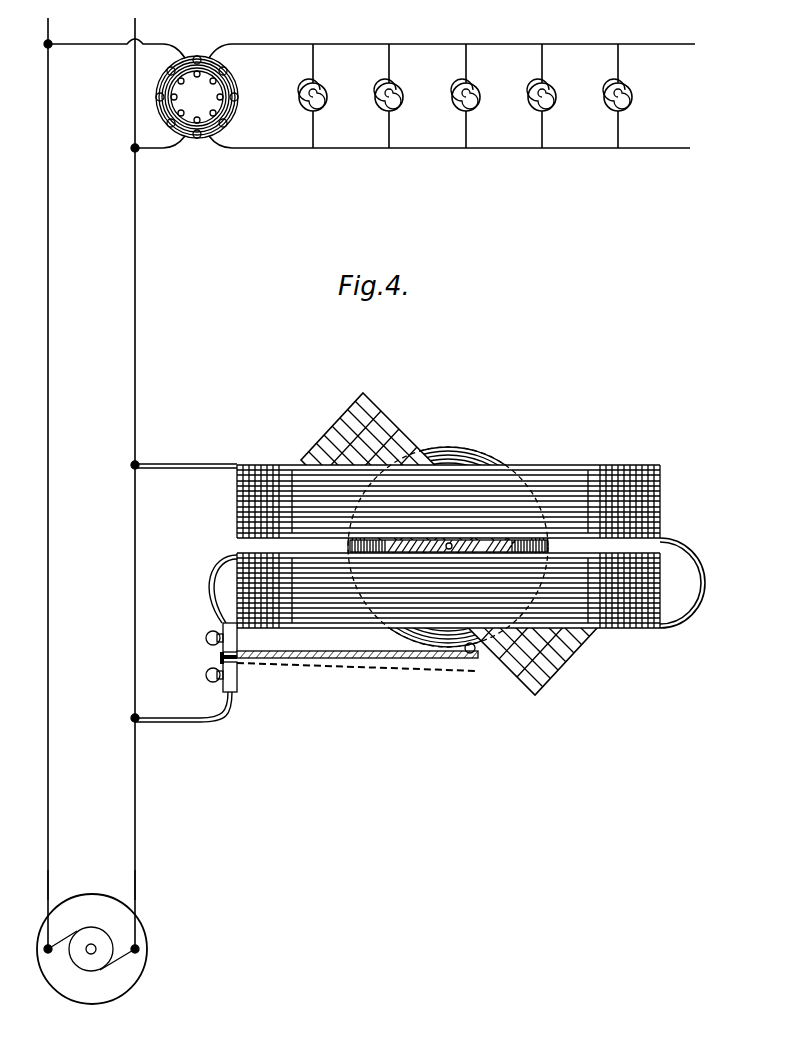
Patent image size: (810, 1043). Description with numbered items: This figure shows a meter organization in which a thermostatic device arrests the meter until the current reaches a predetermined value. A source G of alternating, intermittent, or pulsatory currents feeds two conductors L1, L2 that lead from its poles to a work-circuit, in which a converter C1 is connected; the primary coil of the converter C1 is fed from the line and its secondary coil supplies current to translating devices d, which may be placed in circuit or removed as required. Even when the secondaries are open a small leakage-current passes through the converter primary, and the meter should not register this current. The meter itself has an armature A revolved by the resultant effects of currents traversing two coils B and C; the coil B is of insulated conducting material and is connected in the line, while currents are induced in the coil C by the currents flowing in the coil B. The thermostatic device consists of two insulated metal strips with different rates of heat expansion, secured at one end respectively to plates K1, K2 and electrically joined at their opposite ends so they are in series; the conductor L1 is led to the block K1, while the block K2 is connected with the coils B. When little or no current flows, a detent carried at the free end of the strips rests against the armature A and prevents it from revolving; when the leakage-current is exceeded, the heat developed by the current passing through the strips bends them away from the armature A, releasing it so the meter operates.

The converter C1 is at (371, 93).
The translating devices d is at (473, 96).
The coil C is at (449, 544).
The armature A is at (448, 535).
The coil B is at (420, 547).
The plate K1 is at (206, 638).
The plate K2 is at (206, 675).
The conductor L1 is at (145, 881).
The conductor L2 is at (58, 881).
The source of electric currents G is at (93, 955).